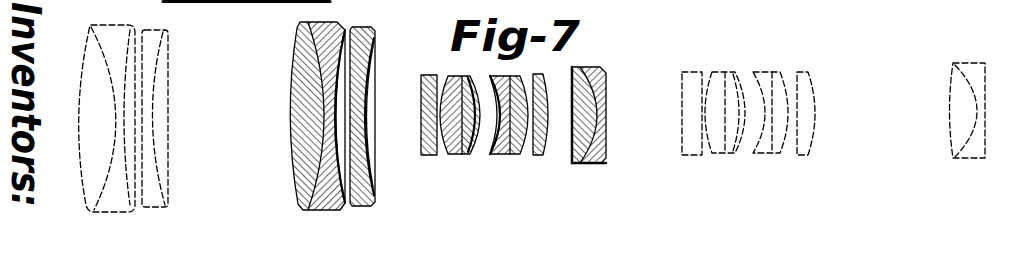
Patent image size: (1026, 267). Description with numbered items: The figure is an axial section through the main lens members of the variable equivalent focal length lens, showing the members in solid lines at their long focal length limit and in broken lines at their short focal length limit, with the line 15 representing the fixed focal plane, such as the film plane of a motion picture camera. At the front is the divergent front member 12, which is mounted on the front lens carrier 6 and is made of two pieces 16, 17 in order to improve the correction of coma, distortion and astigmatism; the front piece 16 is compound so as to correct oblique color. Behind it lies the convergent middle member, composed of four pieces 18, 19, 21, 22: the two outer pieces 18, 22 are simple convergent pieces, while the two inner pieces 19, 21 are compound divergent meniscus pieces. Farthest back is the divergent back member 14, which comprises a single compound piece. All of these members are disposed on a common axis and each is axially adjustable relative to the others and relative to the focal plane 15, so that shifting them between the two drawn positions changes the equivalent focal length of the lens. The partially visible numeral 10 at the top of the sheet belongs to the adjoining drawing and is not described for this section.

The front lens carrier 6 is at (47, 5).
The objective 10 is at (472, 0).
The divergent front member 12 is at (334, 134).
The divergent back member 14 is at (512, 154).
The focal plane 15 is at (988, 109).
The front piece 16 is at (310, 38).
The piece 17 is at (371, 46).
The outer convergent piece 18 is at (428, 155).
The compound divergent meniscus piece 19 is at (462, 155).
The compound divergent meniscus piece 21 is at (510, 155).
The outer convergent piece 22 is at (538, 130).